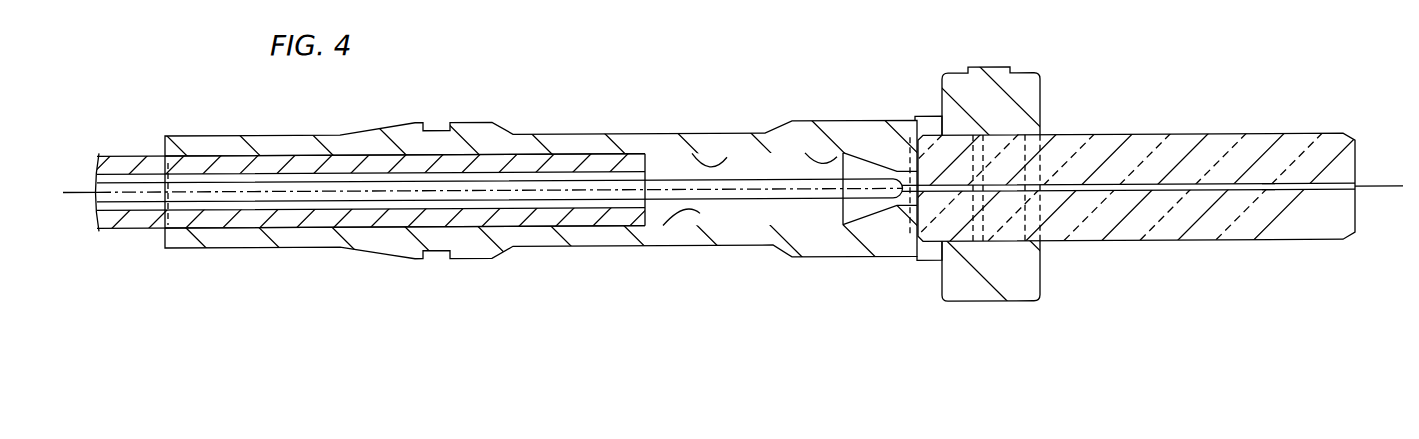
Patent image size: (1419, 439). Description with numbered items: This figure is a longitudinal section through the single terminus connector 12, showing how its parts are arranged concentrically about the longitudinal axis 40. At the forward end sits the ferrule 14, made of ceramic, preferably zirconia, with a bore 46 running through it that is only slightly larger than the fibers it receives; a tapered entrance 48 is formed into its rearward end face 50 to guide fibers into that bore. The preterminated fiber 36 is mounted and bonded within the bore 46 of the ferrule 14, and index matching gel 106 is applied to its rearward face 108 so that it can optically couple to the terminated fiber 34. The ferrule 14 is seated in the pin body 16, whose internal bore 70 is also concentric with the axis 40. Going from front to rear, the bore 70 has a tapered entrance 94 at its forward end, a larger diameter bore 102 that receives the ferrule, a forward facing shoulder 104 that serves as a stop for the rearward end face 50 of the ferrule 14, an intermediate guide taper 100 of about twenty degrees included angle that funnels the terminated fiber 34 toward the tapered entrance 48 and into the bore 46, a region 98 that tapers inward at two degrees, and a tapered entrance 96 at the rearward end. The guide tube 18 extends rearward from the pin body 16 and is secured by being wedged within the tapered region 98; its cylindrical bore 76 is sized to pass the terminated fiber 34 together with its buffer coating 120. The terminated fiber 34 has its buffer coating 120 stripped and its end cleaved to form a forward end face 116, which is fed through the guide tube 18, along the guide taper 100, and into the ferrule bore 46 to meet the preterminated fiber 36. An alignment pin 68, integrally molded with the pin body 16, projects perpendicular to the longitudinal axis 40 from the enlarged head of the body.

The single terminus connector 12 is at (1242, 87).
The ferrule 14 is at (1155, 253).
The pin body 16 is at (831, 266).
The guide tube 18 is at (254, 160).
The terminated fiber 34 is at (1115, 189).
The preterminated fiber 36 is at (1311, 189).
The longitudinal axis 40 is at (1387, 188).
The bore 46 is at (1062, 189).
The tapered entrance 48 is at (903, 170).
The end face 50 is at (918, 139).
The alignment pin 68 is at (988, 71).
The internal bore 70 is at (700, 213).
The bore 76 is at (277, 205).
The tapered entrance 94 is at (1041, 126).
The tapered entrance 96 is at (163, 225).
The tapered region 98 is at (693, 153).
The guide taper 100 is at (805, 153).
The larger diameter bore 102 is at (975, 239).
The forward facing shoulder 104 is at (940, 244).
The index matching gel 106 is at (1268, 194).
The rearward face 108 is at (1267, 185).
The forward end face 116 is at (1266, 190).
The buffer coating 120 is at (318, 196).